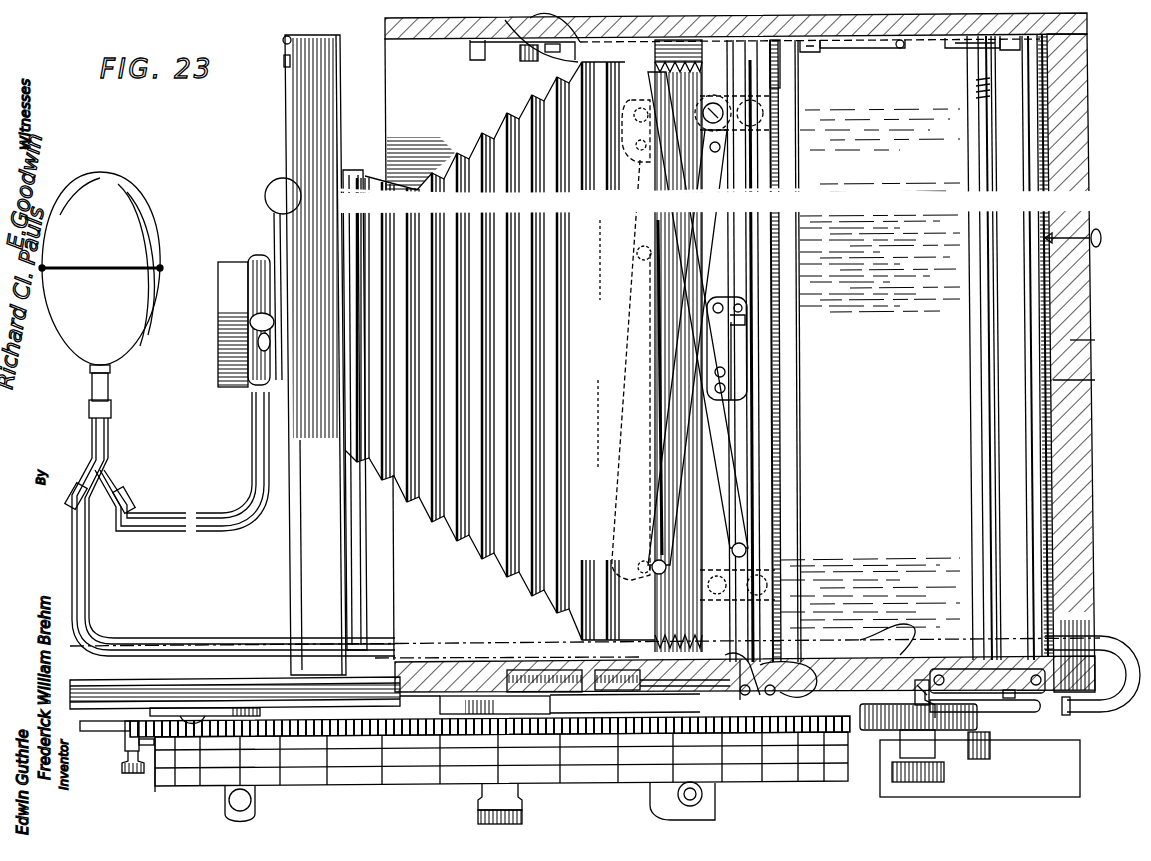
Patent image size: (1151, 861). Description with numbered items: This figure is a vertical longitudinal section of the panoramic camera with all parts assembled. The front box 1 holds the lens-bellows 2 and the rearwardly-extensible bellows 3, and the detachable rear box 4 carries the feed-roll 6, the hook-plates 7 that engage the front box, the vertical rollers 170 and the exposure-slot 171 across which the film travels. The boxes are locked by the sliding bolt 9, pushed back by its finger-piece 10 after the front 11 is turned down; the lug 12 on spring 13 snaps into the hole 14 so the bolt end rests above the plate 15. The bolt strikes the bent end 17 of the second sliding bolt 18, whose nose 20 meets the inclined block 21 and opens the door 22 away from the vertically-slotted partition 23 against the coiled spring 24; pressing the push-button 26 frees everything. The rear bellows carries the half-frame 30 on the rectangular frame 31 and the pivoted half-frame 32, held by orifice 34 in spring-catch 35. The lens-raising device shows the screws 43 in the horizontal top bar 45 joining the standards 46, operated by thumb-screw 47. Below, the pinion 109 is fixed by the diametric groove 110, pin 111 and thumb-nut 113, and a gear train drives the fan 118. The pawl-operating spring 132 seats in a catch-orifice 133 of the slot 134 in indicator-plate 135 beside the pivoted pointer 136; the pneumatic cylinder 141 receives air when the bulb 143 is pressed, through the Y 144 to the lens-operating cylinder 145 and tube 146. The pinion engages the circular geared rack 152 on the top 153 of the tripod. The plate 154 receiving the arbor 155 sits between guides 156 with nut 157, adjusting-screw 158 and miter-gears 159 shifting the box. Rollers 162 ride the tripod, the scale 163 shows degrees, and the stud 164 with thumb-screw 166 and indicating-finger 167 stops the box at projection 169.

The front box 1 is at (385, 100).
The lens-bellows 2 is at (497, 124).
The rearwardly-extensible bellows 3 is at (740, 260).
The rear box 4 is at (1089, 22).
The feed-roll 6 is at (732, 99).
The hook-plates 7 is at (779, 118).
The sliding bolt 9 is at (500, 42).
The finger-piece 10 is at (470, 58).
The front 11 is at (85, 690).
The lug 12 is at (575, 40).
The spring 13 is at (560, 62).
The hole 14 is at (548, 52).
The plate 15 is at (781, 50).
The bent end 17 is at (812, 54).
The second sliding bolt 18 is at (885, 48).
The nose 20 is at (960, 50).
The inclined block 21 is at (1012, 52).
The door 22 is at (1017, 348).
The vertically-slotted partition 23 is at (970, 268).
The coiled spring 24 is at (978, 98).
The push-button 26 is at (525, 60).
The half-frame 30 is at (748, 487).
The rectangular frame 31 is at (690, 346).
The pivoted half-frame 32 is at (775, 512).
The orifice 34 is at (745, 318).
The spring-catch 35 is at (745, 330).
The screws 43 is at (284, 40).
The horizontal top bar 45 is at (283, 62).
The standards 46 is at (315, 355).
The thumb-screw 47 is at (265, 190).
The pinion 109 is at (875, 732).
The diametric groove 110 is at (880, 700).
The pin 111 is at (915, 685).
The thumb-nut 113 is at (944, 776).
The fan 118 is at (1080, 770).
The pawl-operating spring 132 is at (948, 669).
The catch-orifice 133 is at (930, 690).
The slot 134 is at (1000, 712).
The indicator-plate 135 is at (1068, 690).
The pivoted pointer 136 is at (1010, 690).
The pneumatic cylinder 141 is at (1075, 715).
The bulb 143 is at (101, 295).
The Y 144 is at (107, 455).
The lens-operating cylinder 145 is at (255, 392).
The tube 146 is at (1095, 634).
The circular geared rack 152 is at (820, 738).
The top of the tripod 153 is at (501, 777).
The plate 154 is at (468, 716).
The arbor 155 is at (490, 716).
The guides 156 is at (605, 690).
The nut 157 is at (540, 670).
The adjusting-screw 158 is at (665, 690).
The miter-gears 159 is at (720, 648).
The rollers 162 is at (195, 710).
The scale 163 is at (385, 784).
The stud 164 is at (125, 738).
The thumb-screw 166 is at (133, 775).
The indicating-finger 167 is at (163, 774).
The projection 169 is at (748, 735).
The vertical rollers 170 is at (1095, 340).
The exposure-slot 171 is at (1095, 380).